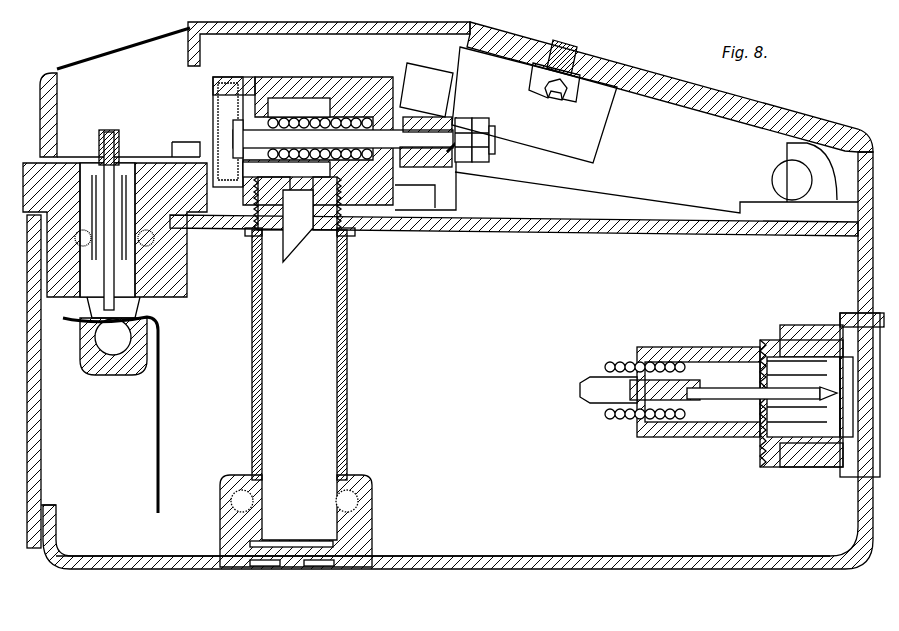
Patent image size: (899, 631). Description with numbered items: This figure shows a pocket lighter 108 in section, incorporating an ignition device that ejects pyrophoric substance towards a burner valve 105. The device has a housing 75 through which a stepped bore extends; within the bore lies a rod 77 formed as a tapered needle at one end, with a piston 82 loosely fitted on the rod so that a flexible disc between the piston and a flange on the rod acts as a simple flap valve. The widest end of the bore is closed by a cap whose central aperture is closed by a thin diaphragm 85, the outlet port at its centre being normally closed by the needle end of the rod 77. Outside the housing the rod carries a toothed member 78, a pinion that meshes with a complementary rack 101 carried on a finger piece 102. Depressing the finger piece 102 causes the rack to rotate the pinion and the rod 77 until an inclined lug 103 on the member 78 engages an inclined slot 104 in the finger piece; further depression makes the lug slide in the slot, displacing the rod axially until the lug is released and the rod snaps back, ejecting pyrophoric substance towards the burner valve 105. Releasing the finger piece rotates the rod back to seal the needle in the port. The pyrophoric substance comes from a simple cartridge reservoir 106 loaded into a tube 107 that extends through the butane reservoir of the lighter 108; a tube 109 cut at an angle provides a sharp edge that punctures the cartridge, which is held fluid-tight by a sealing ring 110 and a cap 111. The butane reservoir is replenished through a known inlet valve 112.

The housing 75 is at (322, 82).
The rod 77 is at (311, 168).
The toothed member 78 is at (402, 175).
The piston 82 is at (268, 108).
The diaphragm 85 is at (213, 115).
The rack 101 is at (410, 70).
The finger piece 102 is at (718, 166).
The inclined lug 103 is at (463, 162).
The inclined slot 104 is at (545, 90).
The burner valve 105 is at (103, 145).
The cartridge reservoir 106 is at (320, 353).
The tube 107 is at (346, 422).
The lighter 108 is at (446, 531).
The tube 109 is at (297, 252).
The sealing ring 110 is at (232, 500).
The cap 111 is at (370, 546).
The inlet valve 112 is at (685, 347).